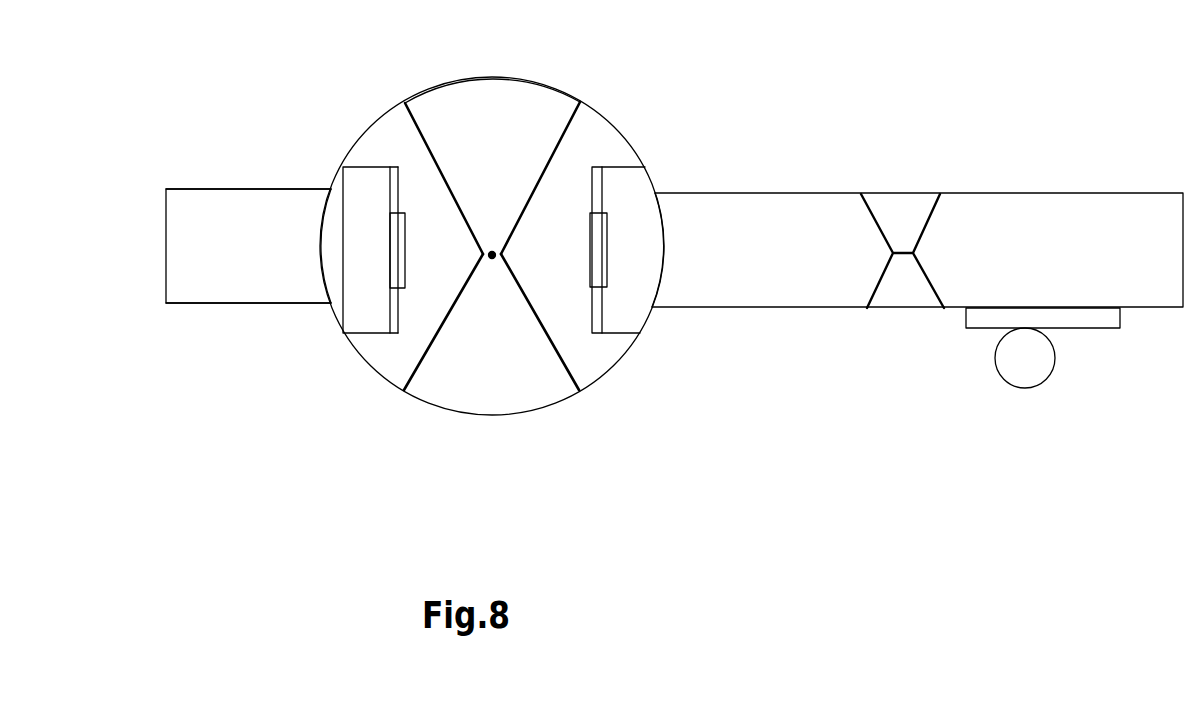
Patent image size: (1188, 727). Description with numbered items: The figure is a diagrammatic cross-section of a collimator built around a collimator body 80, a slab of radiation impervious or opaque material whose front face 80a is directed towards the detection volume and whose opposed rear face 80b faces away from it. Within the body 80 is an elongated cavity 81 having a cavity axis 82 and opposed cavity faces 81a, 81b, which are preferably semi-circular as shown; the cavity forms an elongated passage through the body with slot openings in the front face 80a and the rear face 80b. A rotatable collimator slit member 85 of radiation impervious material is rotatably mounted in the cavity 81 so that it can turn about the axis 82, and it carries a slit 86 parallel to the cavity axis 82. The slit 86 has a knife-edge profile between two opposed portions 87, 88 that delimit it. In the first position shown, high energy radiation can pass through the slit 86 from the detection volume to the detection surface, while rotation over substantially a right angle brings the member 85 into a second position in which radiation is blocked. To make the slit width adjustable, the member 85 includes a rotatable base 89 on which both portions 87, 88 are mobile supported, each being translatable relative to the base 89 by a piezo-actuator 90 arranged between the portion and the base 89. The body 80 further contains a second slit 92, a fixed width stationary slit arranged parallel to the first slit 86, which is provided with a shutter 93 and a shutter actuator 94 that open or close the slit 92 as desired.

The collimator body 80 is at (190, 278).
The front face 80a is at (222, 188).
The rear face 80b is at (253, 305).
The elongated cavity 81 is at (320, 167).
The cavity face 81a is at (301, 237).
The cavity face 81b is at (673, 250).
The cavity axis 82 is at (497, 262).
The rotatable collimator slit member 85 is at (373, 387).
The slit 86 is at (503, 118).
The portion 87 is at (400, 148).
The portion 88 is at (587, 143).
The rotatable base 89 is at (348, 312).
The piezo-actuator 90 is at (602, 237).
The second slit 92 is at (917, 178).
The shutter 93 is at (1087, 318).
The shutter actuator 94 is at (1030, 365).